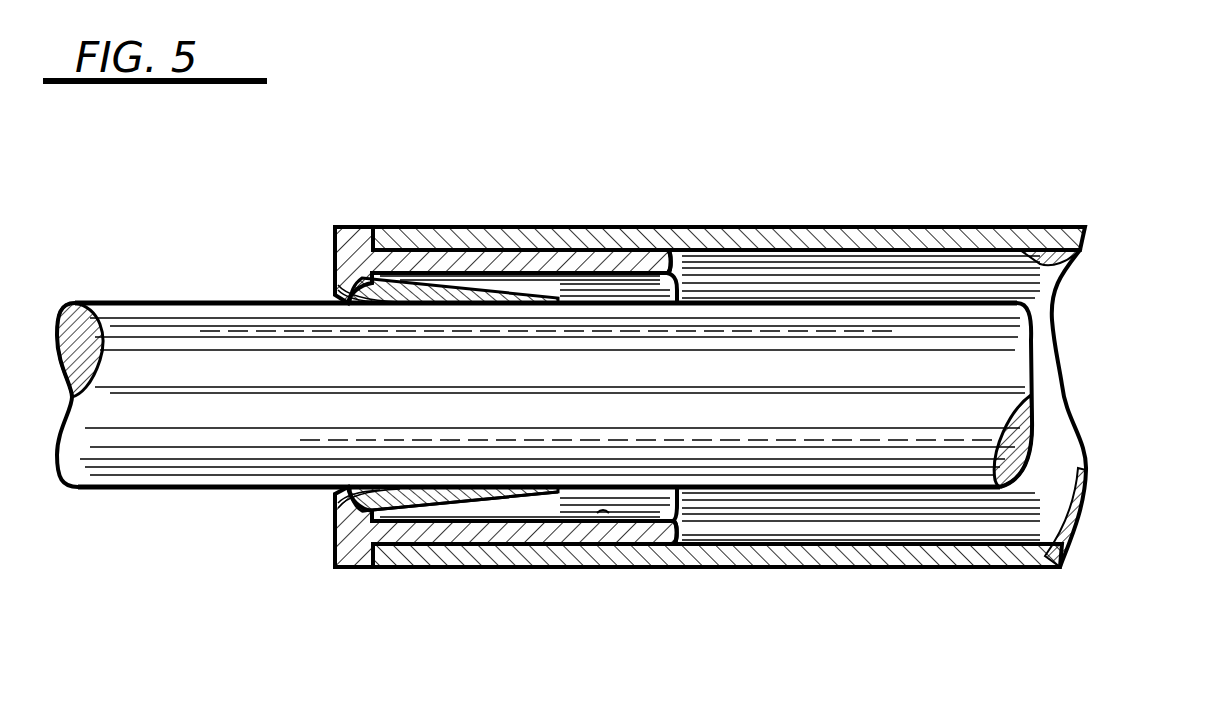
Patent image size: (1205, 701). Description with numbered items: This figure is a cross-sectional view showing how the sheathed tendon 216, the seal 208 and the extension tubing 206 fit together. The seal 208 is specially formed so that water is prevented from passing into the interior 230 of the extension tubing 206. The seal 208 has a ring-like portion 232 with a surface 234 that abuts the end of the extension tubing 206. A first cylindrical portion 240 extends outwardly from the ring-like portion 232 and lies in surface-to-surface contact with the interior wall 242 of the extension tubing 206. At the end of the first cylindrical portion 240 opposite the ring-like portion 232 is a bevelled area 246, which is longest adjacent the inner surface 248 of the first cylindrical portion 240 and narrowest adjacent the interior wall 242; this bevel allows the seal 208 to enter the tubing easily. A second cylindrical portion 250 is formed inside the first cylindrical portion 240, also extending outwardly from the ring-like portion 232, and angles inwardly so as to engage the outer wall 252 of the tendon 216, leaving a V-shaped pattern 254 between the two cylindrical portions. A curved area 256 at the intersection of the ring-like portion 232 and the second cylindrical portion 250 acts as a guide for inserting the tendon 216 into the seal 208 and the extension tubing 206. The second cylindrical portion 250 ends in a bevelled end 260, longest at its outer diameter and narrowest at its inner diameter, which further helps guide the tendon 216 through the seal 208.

The extension tubing 206 is at (967, 227).
The seal 208 is at (353, 210).
The sheathed tendon 216 is at (197, 488).
The interior of extension tubing 230 is at (1040, 527).
The ring-like portion 232 is at (333, 540).
The surface of ring-like portion 234 is at (375, 226).
The first cylindrical portion 240 is at (630, 250).
The interior wall of extension tubing 242 is at (1055, 262).
The bevelled area 246 is at (685, 250).
The inner surface of first cylindrical portion 248 is at (680, 284).
The second cylindrical portion 250 is at (418, 567).
The outer wall of tendon 252 is at (235, 303).
The V-shaped pattern 254 is at (512, 250).
The curved area 256 is at (333, 495).
The bevelled end 260 is at (550, 497).